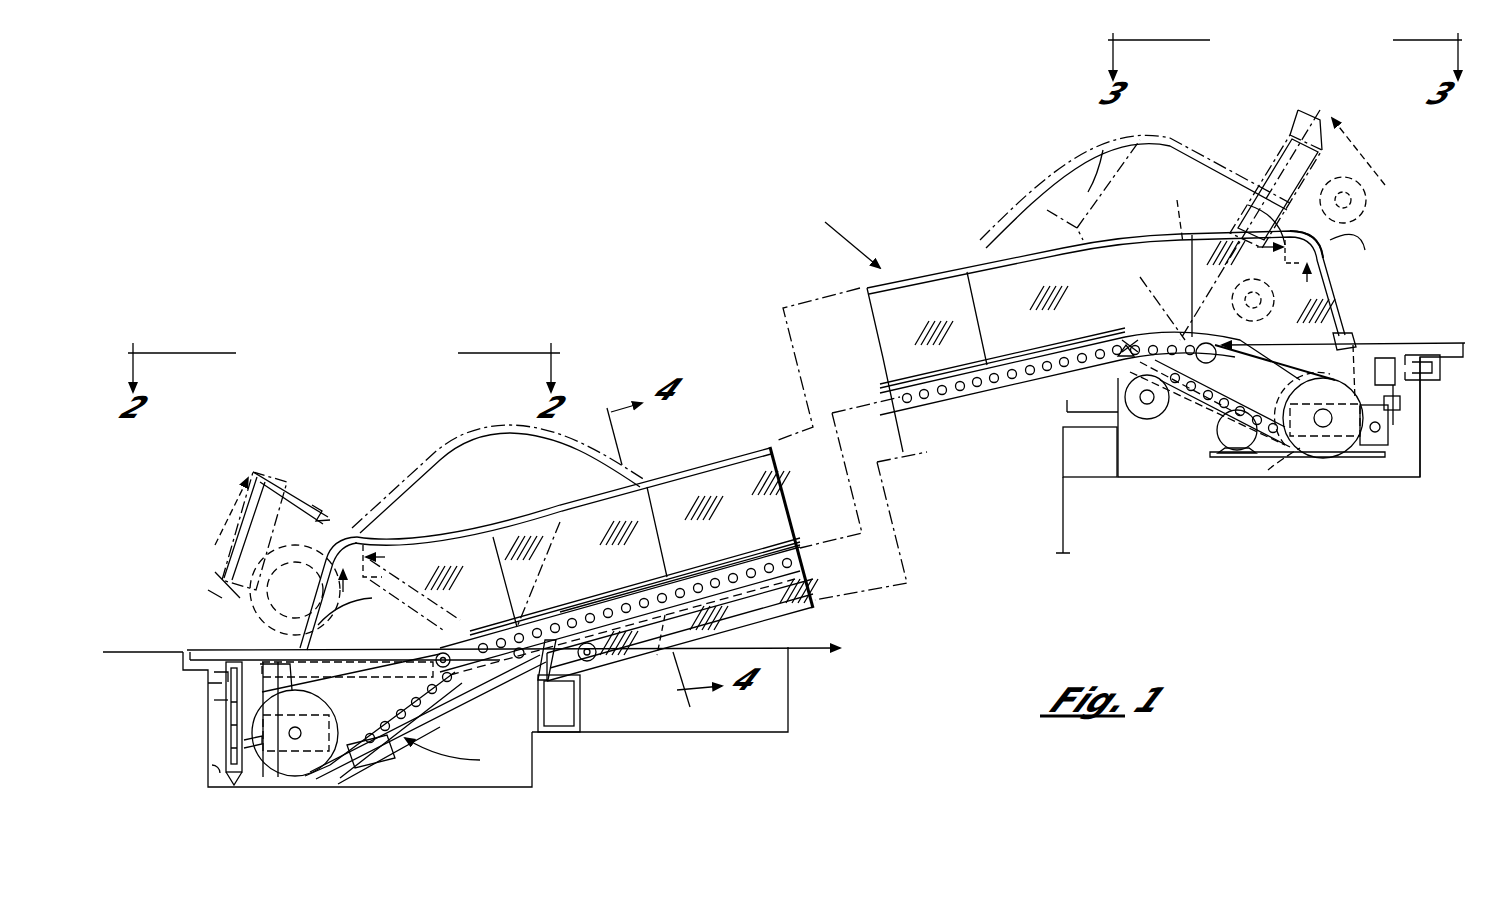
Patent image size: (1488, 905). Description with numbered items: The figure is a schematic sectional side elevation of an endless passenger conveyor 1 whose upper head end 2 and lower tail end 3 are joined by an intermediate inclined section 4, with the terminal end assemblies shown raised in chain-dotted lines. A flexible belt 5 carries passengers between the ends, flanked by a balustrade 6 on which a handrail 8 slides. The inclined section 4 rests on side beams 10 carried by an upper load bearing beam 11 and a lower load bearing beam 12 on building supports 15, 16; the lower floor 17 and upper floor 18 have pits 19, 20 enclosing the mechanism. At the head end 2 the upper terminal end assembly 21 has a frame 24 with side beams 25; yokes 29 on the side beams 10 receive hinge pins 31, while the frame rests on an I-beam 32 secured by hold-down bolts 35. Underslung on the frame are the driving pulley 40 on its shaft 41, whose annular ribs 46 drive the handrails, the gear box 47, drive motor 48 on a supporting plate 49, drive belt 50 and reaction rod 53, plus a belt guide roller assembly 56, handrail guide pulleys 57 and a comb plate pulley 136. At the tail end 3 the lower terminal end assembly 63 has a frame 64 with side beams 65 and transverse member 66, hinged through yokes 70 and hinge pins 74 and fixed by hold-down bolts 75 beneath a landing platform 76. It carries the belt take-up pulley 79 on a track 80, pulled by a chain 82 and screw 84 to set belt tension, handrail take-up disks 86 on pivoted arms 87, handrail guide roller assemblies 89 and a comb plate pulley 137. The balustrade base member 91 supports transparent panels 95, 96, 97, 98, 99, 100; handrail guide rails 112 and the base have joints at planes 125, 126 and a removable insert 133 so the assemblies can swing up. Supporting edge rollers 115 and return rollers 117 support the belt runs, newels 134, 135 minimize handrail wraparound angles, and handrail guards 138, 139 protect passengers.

The endless conveyor 1 is at (846, 235).
The upper head end 2 is at (1385, 338).
The lower tail end 3 is at (206, 712).
The intermediate inclined section 4 is at (812, 595).
The flexible belt 5 is at (712, 568).
The balustrade 6 is at (705, 466).
The handrail 8 is at (915, 280).
The side beams 10 is at (780, 606).
The upper load bearing beam 11 is at (1080, 420).
The lower load bearing beam 12 is at (570, 716).
The building support 15 is at (1090, 440).
The building support 16 is at (575, 735).
The lower floor 17 is at (132, 652).
The upper floor 18 is at (1462, 345).
The pit 19 is at (214, 770).
The pit 20 is at (1420, 478).
The upper terminal end assembly 21 is at (1230, 160).
The frame 24 is at (1304, 130).
The side beams 25 is at (1396, 405).
The yokes 29 is at (1110, 350).
The hinge pins 31 is at (1128, 345).
The I-beam 32 is at (1398, 378).
The hold-down bolts 35 is at (1438, 355).
The driving pulley 40 is at (1352, 225).
The shaft 41 is at (1320, 430).
The annular ribs 46 is at (1345, 452).
The gear box 47 is at (1385, 438).
The drive motor 48 is at (1230, 300).
The supporting plate 49 is at (1236, 458).
The drive belt 50 is at (1272, 468).
The reaction rod 53 is at (1400, 412).
The belt guide roller assembly 56 is at (1215, 395).
The handrail guide pulleys 57 is at (1147, 420).
The lower terminal end assembly 63 is at (280, 490).
The frame 64 is at (240, 660).
The side beams 65 is at (212, 699).
The transverse member 66 is at (213, 679).
The yokes 70 is at (540, 670).
The hinge pins 74 is at (512, 660).
The hold-down bolts 75 is at (190, 655).
The landing platform 76 is at (268, 664).
The belt take-up pulley 79 is at (292, 760).
The track 80 is at (360, 760).
The chain 82 is at (258, 750).
The screw 84 is at (230, 700).
The handrail take-up disks 86 is at (336, 735).
The arm 87 is at (232, 725).
The handrail guide roller assemblies 89 is at (385, 765).
The base member 91 is at (598, 605).
The transparent panel 95 is at (470, 536).
The transparent panel 96 is at (560, 510).
The transparent panel 97 is at (780, 452).
The transparent panel 98 is at (950, 283).
The transparent panel 99 is at (1160, 245).
The transparent panel 100 is at (1328, 262).
The handrail guide rails 112 is at (1112, 158).
The supporting edge rollers 115 is at (755, 565).
The return rollers 117 is at (592, 663).
The joint plane 125 is at (1132, 343).
The joint plane line 126 is at (1047, 210).
The insert 133 is at (520, 612).
The newel 134 is at (1250, 205).
The newel 135 is at (348, 535).
The comb plate pulley 136 is at (1208, 343).
The comb plate pulley 137 is at (450, 643).
The handrail guard 138 is at (333, 620).
The handrail guard 139 is at (1352, 340).